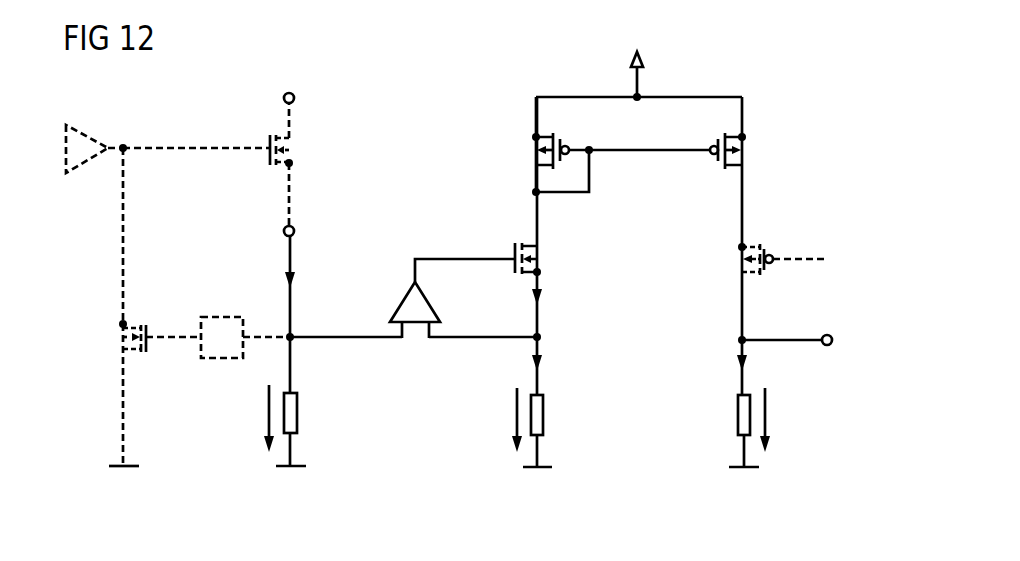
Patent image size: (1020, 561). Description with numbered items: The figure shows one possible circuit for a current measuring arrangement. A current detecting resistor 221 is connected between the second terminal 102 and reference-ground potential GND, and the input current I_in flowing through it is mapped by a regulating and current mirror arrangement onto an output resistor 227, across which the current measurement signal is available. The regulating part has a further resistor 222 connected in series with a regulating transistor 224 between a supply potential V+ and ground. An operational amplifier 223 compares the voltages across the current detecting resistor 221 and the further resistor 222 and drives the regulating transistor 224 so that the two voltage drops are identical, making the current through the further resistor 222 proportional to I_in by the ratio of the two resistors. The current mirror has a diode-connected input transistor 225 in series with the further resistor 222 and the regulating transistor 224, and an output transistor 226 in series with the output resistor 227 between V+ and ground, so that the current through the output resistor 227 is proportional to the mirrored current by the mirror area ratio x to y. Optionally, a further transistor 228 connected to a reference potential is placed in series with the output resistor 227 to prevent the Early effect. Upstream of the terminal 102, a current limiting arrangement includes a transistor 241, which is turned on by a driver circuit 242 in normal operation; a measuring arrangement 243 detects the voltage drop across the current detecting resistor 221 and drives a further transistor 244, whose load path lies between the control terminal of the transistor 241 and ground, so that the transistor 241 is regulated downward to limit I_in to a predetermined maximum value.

The second terminal 102 is at (296, 96).
The current detecting resistor 221 is at (298, 413).
The further resistor 222 is at (545, 415).
The operational amplifier 223 is at (430, 300).
The regulating transistor 224 is at (513, 250).
The input transistor 225 is at (567, 140).
The output transistor 226 is at (713, 160).
The output resistor 227 is at (735, 415).
The further transistor 228 is at (770, 250).
The transistor 241 is at (266, 138).
The driver circuit 242 is at (93, 140).
The measuring arrangement 243 is at (216, 317).
The further transistor 244 is at (143, 323).